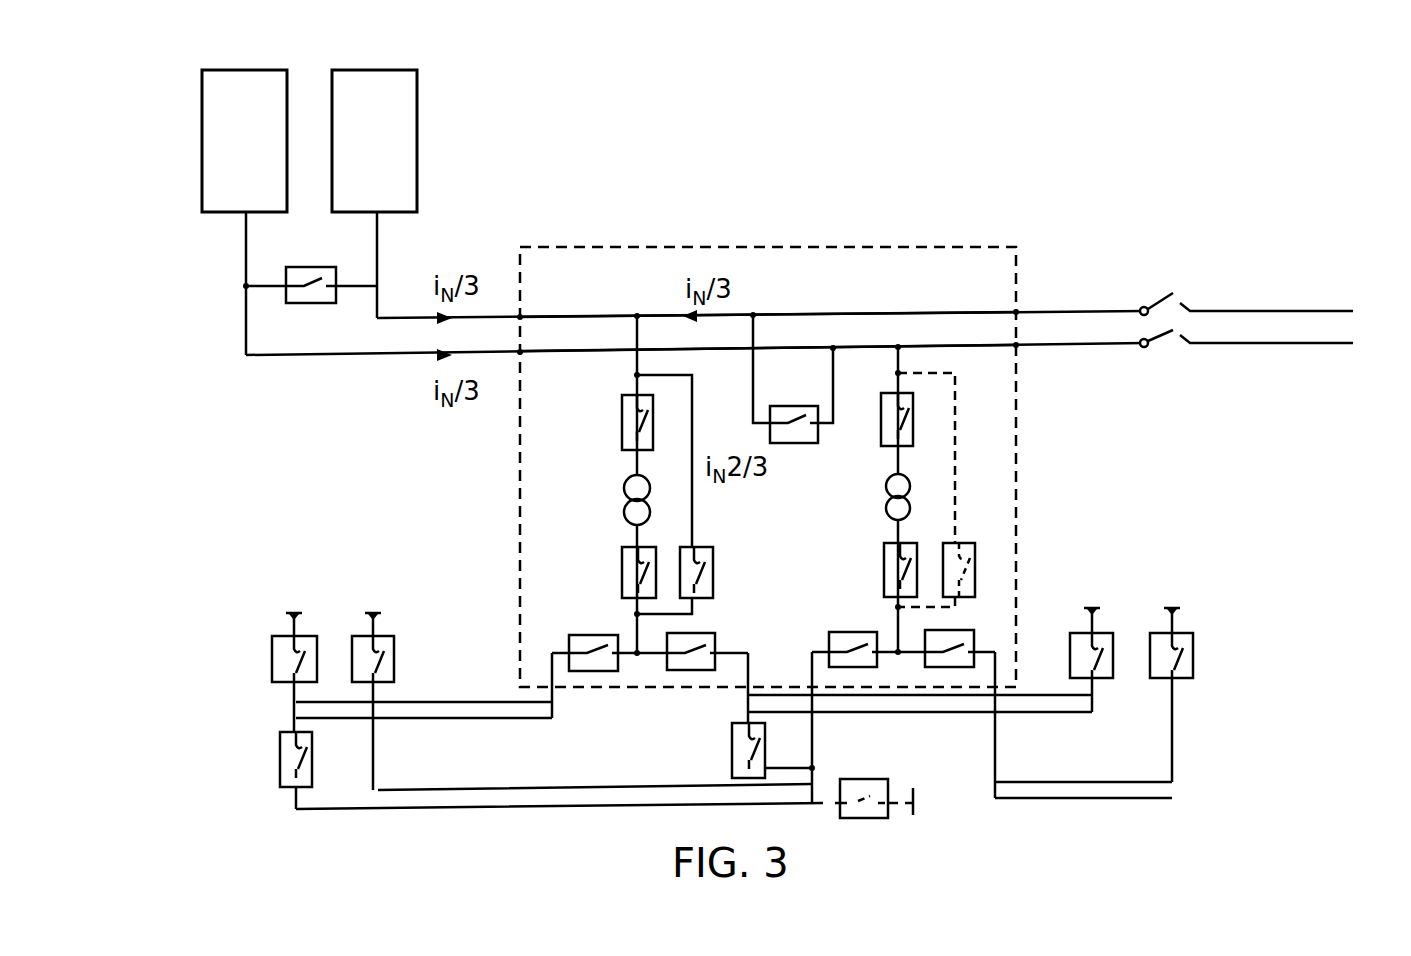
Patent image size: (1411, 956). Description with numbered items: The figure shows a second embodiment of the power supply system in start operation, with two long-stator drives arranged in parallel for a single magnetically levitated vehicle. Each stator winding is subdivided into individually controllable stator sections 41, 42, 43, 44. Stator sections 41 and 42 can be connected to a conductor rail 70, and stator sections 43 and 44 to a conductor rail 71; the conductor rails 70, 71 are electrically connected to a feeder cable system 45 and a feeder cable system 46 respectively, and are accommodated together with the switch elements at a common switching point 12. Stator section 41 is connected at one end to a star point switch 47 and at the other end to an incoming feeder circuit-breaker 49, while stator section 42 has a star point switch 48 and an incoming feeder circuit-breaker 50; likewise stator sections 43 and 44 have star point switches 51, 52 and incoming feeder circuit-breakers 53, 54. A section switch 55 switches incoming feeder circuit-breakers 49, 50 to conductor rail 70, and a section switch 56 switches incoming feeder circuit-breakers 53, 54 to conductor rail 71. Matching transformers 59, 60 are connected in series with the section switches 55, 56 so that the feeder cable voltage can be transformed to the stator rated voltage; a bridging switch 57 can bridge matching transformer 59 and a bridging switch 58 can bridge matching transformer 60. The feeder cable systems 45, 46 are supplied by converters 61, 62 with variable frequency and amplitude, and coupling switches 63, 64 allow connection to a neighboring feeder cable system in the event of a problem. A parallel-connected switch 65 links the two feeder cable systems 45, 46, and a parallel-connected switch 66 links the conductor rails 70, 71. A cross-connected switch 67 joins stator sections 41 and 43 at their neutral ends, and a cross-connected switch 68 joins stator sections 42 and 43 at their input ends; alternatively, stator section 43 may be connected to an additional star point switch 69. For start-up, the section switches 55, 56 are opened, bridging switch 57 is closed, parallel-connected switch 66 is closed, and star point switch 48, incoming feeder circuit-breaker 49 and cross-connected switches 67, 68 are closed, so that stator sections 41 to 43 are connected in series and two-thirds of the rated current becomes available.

The switching point 12 is at (1018, 396).
The stator section 41 is at (465, 702).
The stator section 42 is at (1040, 694).
The stator section 43 is at (548, 806).
The stator section 44 is at (1078, 798).
The feeder cable system 45 is at (1065, 311).
The feeder cable system 46 is at (316, 355).
The star point switch 47 is at (290, 660).
The star point switch 48 is at (1105, 678).
The incoming feeder circuit-breaker 49 is at (600, 617).
The incoming feeder circuit-breaker 50 is at (705, 650).
The star point switch 51 is at (395, 672).
The star point switch 52 is at (1188, 678).
The incoming feeder circuit-breaker 53 is at (842, 640).
The incoming feeder circuit-breaker 54 is at (965, 645).
The section switch 55 is at (634, 571).
The section switch 56 is at (888, 567).
The bridging switch 57 is at (705, 580).
The bridging switch 58 is at (968, 590).
The matching transformer 59 is at (630, 490).
The matching transformer 60 is at (892, 488).
The converter 61 is at (367, 70).
The converter 62 is at (237, 70).
The coupling switch 63 is at (1148, 306).
The coupling switch 64 is at (1152, 347).
The parallel-connected switch 65 is at (306, 267).
The parallel-connected switch 66 is at (797, 432).
The cross-connected switch 67 is at (288, 760).
The cross-connected switch 68 is at (740, 745).
The star point switch 69 is at (862, 790).
The conductor rail 70 is at (830, 315).
The conductor rail 71 is at (965, 347).